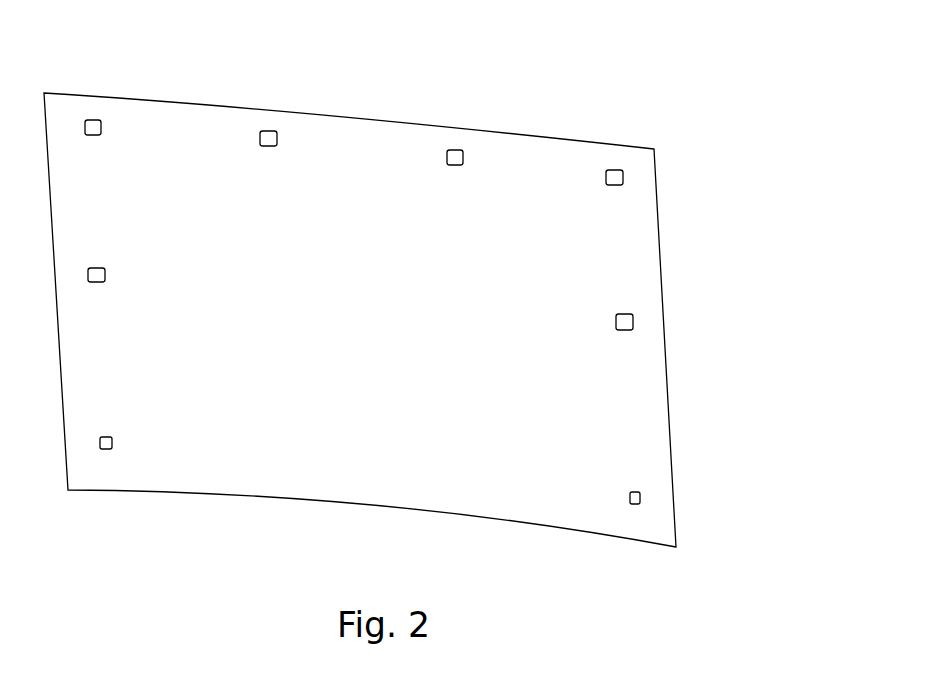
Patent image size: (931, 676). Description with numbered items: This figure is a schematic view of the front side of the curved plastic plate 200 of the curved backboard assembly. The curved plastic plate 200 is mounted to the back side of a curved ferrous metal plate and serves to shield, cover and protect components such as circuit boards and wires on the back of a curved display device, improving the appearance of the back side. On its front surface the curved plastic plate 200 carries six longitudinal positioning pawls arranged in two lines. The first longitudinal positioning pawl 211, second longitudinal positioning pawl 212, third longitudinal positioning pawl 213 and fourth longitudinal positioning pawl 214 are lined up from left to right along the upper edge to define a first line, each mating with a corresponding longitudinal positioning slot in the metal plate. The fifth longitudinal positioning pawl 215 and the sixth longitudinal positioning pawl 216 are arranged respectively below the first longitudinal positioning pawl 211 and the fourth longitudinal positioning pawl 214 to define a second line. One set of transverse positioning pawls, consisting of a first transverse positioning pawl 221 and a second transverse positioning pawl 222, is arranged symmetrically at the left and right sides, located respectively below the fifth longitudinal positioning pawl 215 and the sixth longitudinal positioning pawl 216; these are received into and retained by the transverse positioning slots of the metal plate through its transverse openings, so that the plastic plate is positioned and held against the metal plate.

The curved plastic plate 200 is at (433, 446).
The first longitudinal positioning pawl 211 is at (92, 120).
The second longitudinal positioning pawl 212 is at (268, 133).
The third longitudinal positioning pawl 213 is at (455, 152).
The fourth longitudinal positioning pawl 214 is at (617, 170).
The fifth longitudinal positioning pawl 215 is at (105, 272).
The sixth longitudinal positioning pawl 216 is at (633, 320).
The first transverse positioning pawl 221 is at (112, 442).
The second transverse positioning pawl 222 is at (640, 498).